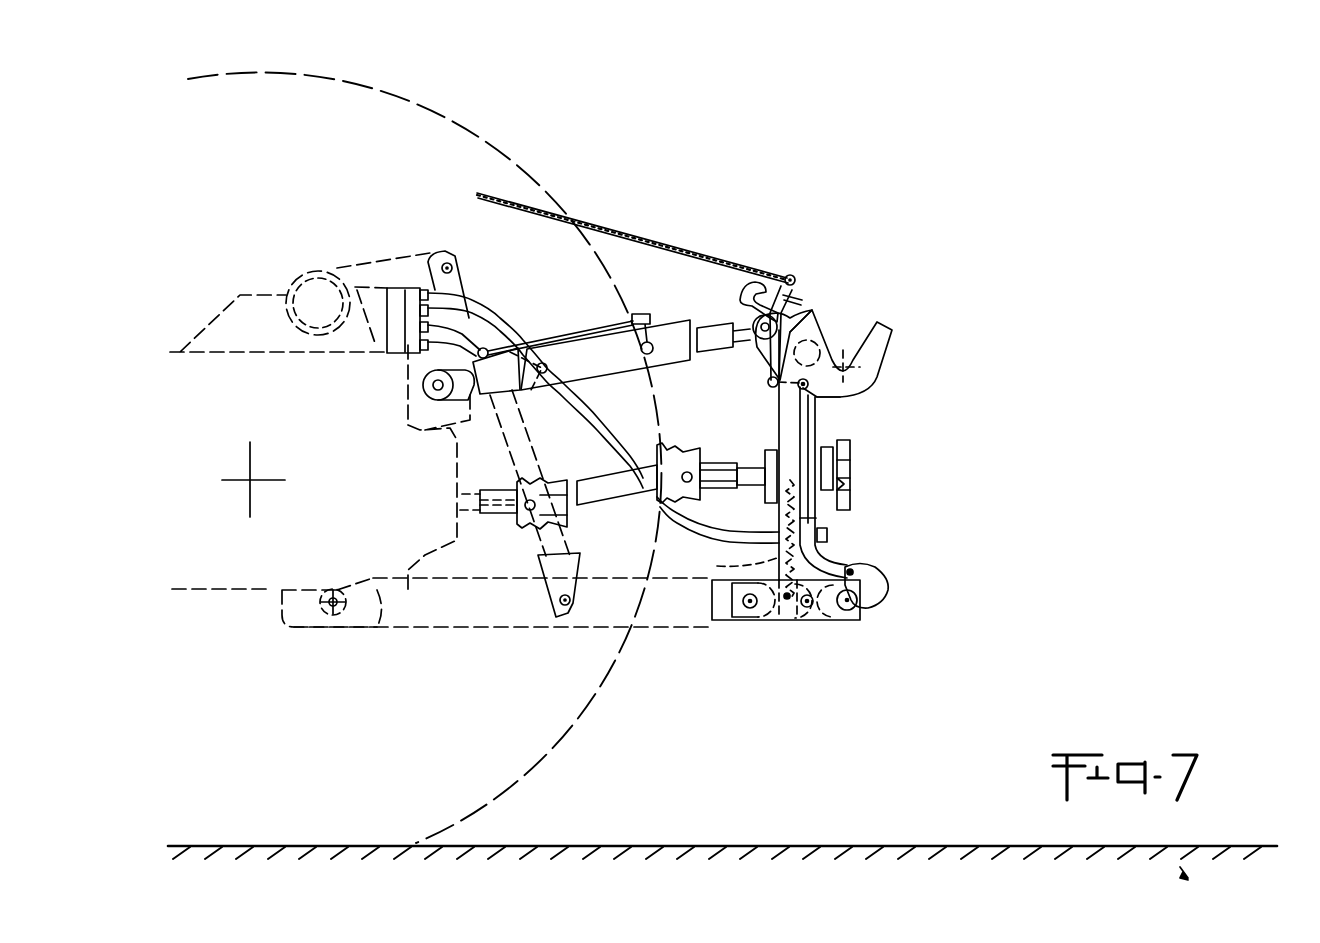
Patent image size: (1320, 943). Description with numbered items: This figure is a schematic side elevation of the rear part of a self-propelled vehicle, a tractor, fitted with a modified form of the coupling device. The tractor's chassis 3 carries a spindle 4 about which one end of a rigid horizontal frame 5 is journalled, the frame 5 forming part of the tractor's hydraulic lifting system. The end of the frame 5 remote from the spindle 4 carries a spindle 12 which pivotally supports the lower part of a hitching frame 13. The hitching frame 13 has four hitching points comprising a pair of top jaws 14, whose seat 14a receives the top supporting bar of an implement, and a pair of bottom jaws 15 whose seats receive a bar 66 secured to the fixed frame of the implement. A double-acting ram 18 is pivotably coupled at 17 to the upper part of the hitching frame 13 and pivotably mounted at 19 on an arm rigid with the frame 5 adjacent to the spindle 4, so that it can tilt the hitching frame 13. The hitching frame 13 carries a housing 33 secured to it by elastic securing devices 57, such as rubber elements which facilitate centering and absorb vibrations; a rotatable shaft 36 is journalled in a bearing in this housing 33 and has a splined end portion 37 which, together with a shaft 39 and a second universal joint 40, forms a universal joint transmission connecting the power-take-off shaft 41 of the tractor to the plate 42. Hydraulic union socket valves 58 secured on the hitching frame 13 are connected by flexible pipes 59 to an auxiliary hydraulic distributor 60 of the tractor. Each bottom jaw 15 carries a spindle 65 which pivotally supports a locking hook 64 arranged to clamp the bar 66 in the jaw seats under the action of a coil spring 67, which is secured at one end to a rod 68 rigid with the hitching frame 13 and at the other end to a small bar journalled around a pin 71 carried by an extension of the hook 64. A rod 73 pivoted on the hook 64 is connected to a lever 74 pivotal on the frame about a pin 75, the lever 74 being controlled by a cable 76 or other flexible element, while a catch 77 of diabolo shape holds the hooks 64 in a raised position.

The chassis 3 is at (253, 573).
The spindle 4 is at (333, 612).
The rigid horizontal frame 5 is at (622, 616).
The spindle 12 is at (750, 610).
The hitching frame 13 is at (817, 417).
The top jaws 14 is at (878, 342).
The seat 14a is at (850, 365).
The bottom jaws 15 is at (772, 619).
The pivot 17 is at (757, 320).
The double-acting ram 18 is at (588, 358).
The pivot 19 is at (427, 384).
The housing 33 is at (823, 453).
The rotatable shaft 36 is at (755, 488).
The splined end portion 37 is at (695, 443).
The shaft 39 is at (597, 493).
The second universal joint 40 is at (567, 512).
The power-take-off shaft 41 is at (467, 513).
The plate 42 is at (850, 448).
The elastic securing devices 57 is at (816, 518).
The hydraulic union socket valves 58 is at (805, 549).
The flexible pipes 59 is at (690, 547).
The auxiliary hydraulic distributor 60 is at (405, 289).
The locking hook 64 is at (883, 585).
The spindle 65 is at (809, 608).
The bar 66 is at (847, 612).
The coil spring 67 is at (732, 563).
The rod 68 is at (765, 457).
The pin 71 is at (788, 600).
The rod 73 is at (803, 427).
The lever 74 is at (795, 290).
The pin 75 is at (768, 382).
The cable 76 is at (722, 260).
The catch 77 is at (797, 290).